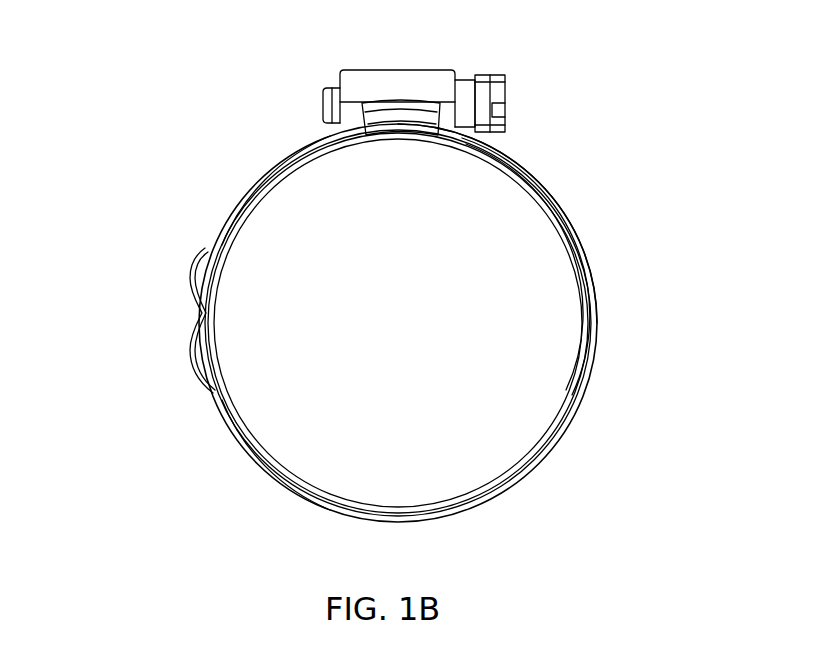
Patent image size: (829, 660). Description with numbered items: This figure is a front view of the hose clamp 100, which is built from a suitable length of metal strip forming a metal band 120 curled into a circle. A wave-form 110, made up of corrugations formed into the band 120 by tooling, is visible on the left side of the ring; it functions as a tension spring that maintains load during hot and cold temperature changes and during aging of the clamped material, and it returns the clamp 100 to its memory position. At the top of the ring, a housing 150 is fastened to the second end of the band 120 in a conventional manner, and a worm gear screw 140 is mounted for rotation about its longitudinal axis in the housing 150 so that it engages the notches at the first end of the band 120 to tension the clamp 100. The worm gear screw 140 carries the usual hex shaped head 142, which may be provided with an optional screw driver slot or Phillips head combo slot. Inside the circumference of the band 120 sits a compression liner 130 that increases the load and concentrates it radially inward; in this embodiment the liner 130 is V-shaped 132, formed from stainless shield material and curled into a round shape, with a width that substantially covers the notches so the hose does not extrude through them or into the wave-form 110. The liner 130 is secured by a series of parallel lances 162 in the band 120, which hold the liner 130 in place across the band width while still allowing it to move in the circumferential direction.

The hose clamp 100 is at (108, 272).
The wave-form 110 is at (193, 368).
The metal band 120 is at (583, 385).
The compression liner 130 is at (243, 223).
The V-shaped 132 is at (247, 427).
The worm gear screw 140 is at (325, 93).
The hex shaped head 142 is at (507, 88).
The housing 150 is at (433, 68).
The lances 162 is at (547, 208).